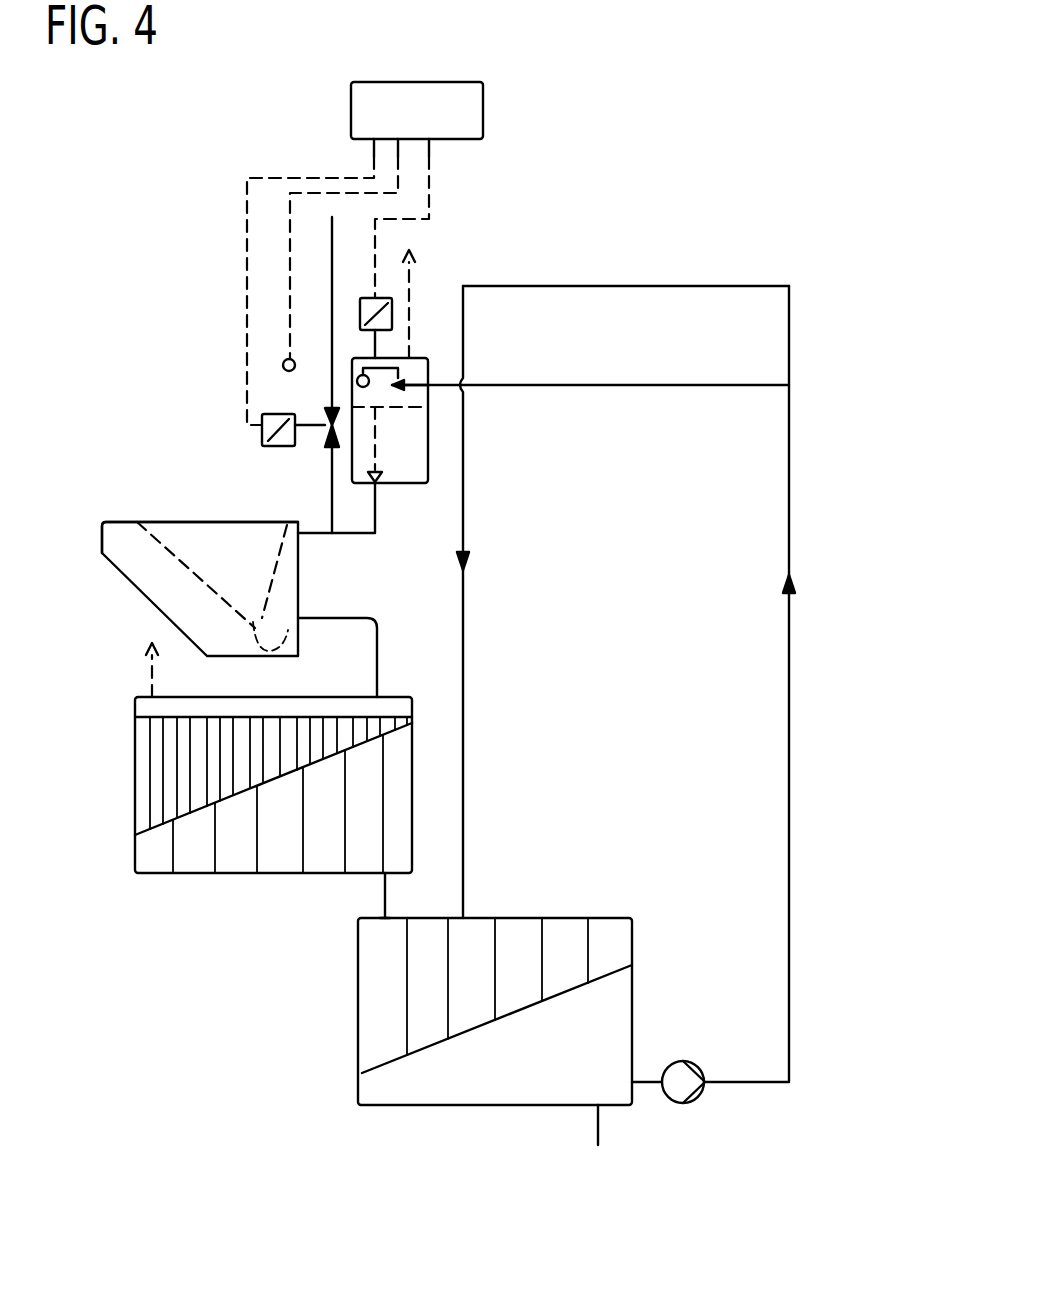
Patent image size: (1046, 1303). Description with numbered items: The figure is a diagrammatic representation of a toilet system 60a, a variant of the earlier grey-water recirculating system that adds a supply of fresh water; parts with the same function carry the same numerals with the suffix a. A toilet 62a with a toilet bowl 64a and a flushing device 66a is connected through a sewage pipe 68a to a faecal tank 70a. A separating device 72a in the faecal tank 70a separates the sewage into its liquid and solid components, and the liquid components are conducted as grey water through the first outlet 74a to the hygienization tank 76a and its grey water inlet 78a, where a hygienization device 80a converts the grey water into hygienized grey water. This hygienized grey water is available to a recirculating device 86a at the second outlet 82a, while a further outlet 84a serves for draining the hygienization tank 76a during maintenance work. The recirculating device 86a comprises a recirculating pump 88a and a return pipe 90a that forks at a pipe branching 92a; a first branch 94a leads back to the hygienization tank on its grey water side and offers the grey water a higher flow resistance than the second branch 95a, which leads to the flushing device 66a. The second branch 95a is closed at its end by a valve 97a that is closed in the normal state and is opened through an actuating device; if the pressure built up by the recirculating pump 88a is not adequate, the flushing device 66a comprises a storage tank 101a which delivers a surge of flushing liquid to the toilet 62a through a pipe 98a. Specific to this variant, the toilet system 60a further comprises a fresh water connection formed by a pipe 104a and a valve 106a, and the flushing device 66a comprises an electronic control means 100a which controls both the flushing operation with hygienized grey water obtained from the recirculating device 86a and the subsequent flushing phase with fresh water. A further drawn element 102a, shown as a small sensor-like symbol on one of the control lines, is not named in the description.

The toilet system 60a is at (237, 978).
The toilet 62a is at (153, 486).
The toilet bowl 64a is at (102, 522).
The flushing device 66a is at (215, 263).
The sewage pipe 68a is at (377, 650).
The faecal tank 70a is at (135, 772).
The separating device 72a is at (160, 830).
The first outlet 74a is at (385, 877).
The hygienization tank 76a is at (358, 1017).
The grey water inlet 78a is at (385, 917).
The hygienization device 80a is at (582, 990).
The second outlet 82a is at (635, 1085).
The further outlet 84a is at (598, 1106).
The recirculating device 86a is at (805, 678).
The recirculating pump 88a is at (700, 1095).
The return pipe 90a is at (790, 905).
The pipe branching 92a is at (790, 380).
The first branch 94a is at (465, 595).
The second branch 95a is at (590, 385).
The valve 97a is at (392, 392).
The pipe 98a is at (345, 535).
The electronic control means 100a is at (483, 118).
The storage tank 101a is at (402, 483).
The sensor 102a is at (283, 365).
The pipe 104a is at (332, 243).
The valve 106a is at (330, 445).